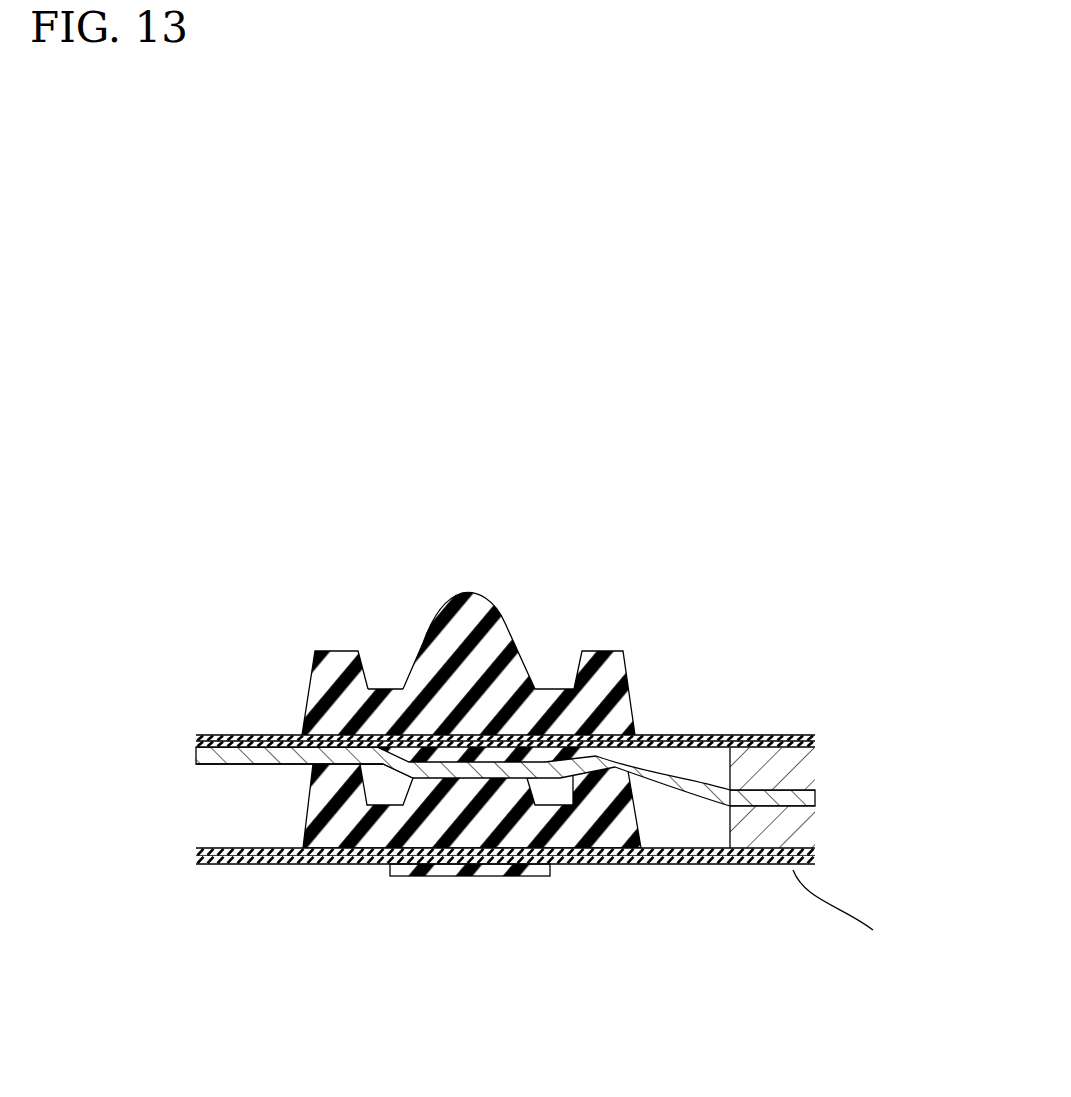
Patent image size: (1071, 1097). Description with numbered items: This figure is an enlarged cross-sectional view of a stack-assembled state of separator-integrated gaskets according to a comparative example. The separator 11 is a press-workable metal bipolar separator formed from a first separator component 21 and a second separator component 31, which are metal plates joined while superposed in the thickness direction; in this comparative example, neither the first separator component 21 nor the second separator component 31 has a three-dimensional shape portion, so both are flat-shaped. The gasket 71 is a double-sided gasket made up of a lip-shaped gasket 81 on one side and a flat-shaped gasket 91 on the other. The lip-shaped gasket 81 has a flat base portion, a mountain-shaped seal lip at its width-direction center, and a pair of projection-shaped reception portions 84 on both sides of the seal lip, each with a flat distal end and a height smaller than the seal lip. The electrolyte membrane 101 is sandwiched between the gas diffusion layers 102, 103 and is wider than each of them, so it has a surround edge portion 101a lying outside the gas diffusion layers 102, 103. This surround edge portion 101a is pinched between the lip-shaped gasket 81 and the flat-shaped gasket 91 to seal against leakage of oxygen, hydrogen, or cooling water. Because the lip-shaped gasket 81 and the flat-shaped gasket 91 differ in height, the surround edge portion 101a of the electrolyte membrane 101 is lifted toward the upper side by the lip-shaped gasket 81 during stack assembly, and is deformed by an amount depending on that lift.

The separator 11 is at (575, 870).
The first separator component 21 is at (797, 845).
The second separator component 31 is at (549, 883).
The gasket 71 is at (457, 665).
The lip-shaped gasket 81 is at (467, 838).
The reception portions 84 is at (335, 772).
The flat-shaped gasket 91 is at (466, 877).
The electrolyte membrane 101 is at (499, 774).
The surround edge portion 101a is at (205, 761).
The gas diffusion layer 102 is at (806, 771).
The gas diffusion layer 103 is at (797, 838).